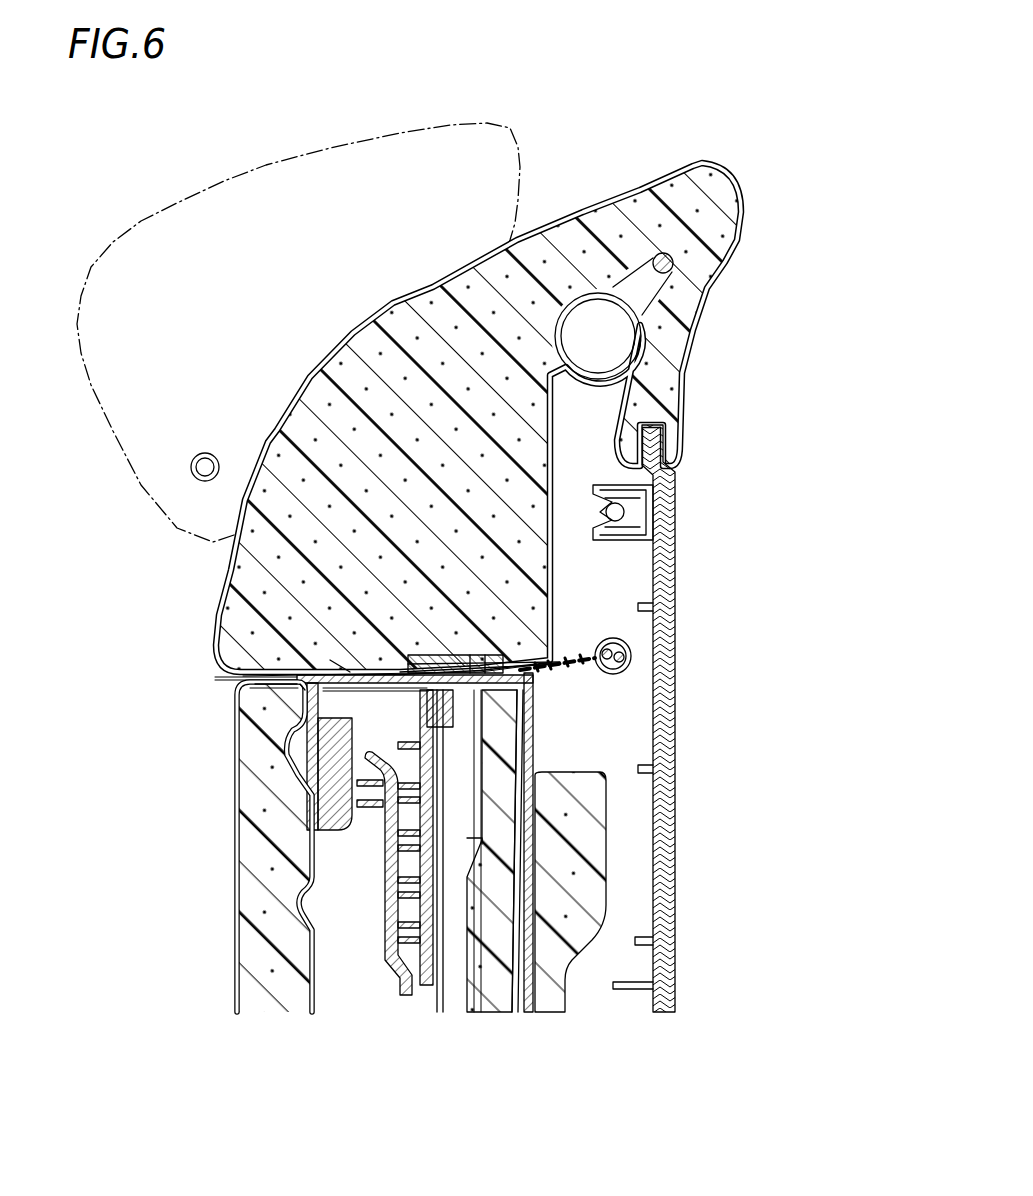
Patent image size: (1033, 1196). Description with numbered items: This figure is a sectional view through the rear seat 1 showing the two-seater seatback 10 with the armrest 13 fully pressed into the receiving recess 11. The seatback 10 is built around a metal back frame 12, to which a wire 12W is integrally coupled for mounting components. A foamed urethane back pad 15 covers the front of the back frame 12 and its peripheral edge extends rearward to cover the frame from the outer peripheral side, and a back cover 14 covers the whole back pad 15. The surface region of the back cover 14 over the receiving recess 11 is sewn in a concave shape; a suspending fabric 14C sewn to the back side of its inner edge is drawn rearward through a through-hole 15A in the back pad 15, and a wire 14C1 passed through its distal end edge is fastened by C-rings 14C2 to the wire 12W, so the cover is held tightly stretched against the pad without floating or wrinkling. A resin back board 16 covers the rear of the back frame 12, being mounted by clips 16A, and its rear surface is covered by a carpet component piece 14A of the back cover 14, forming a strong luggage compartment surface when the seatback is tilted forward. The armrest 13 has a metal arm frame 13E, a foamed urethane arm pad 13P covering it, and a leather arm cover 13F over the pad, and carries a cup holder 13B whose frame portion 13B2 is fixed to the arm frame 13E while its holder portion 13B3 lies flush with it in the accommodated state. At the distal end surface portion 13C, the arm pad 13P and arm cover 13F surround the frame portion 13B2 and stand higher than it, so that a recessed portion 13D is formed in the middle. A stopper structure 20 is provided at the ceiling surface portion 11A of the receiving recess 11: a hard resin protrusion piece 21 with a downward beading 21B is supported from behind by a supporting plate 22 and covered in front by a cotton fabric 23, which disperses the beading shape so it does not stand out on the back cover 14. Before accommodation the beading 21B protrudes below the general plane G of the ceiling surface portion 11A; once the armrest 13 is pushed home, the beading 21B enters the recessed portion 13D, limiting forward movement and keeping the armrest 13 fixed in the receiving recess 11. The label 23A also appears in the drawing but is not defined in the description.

The seat 1 is at (177, 174).
The two-seater seatback 10 is at (602, 145).
The receiving recess 11 is at (516, 909).
The ceiling surface portion 11A is at (250, 688).
The back frame 12 is at (650, 333).
The wire 12W is at (674, 263).
The armrest 13 is at (232, 840).
The cup holder 13B is at (262, 672).
The frame portion 13B2 is at (345, 745).
The holder portion 13B3 is at (256, 676).
The distal end surface portion 13C is at (540, 660).
The recessed portion 13D is at (530, 648).
The arm frame 13E is at (240, 925).
The arm cover 13F is at (238, 797).
The arm pad 13P is at (272, 890).
The back cover 14 is at (428, 283).
The component piece 14A is at (358, 330).
The suspending fabric 14C is at (578, 676).
The wire 14C1 is at (612, 676).
The C-ring 14C2 is at (630, 665).
The back pad 15 is at (318, 398).
The through-hole 15A is at (536, 766).
The back board 16 is at (672, 814).
The clip 16A is at (640, 484).
The stopper structure 20 is at (482, 655).
The protrusion piece 21 is at (458, 652).
The beading 21B is at (472, 652).
The supporting plate 22 is at (402, 660).
The cotton fabric 23 is at (380, 668).
The frame portion 23A is at (440, 652).
The general plane G is at (240, 682).